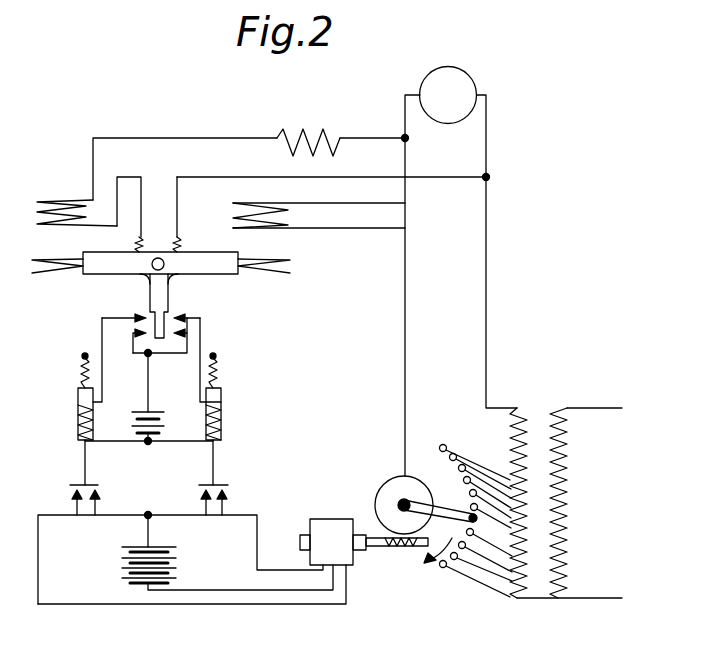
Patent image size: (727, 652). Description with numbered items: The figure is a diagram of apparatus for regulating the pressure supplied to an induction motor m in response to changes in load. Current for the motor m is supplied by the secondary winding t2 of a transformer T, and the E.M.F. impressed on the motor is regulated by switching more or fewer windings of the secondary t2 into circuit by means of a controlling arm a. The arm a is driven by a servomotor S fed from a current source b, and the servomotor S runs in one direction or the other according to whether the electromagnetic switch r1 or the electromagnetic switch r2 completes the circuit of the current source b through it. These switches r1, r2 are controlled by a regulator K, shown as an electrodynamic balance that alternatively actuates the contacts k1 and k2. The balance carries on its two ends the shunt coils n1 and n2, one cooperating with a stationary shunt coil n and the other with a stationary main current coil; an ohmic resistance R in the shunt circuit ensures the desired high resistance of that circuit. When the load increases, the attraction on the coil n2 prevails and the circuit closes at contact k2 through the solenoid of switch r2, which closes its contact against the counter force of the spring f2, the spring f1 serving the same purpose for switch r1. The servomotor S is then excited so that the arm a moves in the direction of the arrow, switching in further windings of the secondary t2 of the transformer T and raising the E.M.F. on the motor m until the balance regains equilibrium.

The induction motor m is at (448, 95).
The ohmic resistance R is at (308, 129).
The stationary shunt coil n is at (304, 212).
The regulator K is at (168, 258).
The shunt coil n1 is at (45, 270).
The shunt coil n2 is at (278, 270).
The contact k1 is at (130, 331).
The contact k2 is at (190, 331).
The spring f1 is at (72, 371).
The spring f2 is at (226, 371).
The electromagnetic switch r1 is at (78, 440).
The electromagnetic switch r2 is at (221, 440).
The current source b is at (158, 549).
The servomotor S is at (364, 542).
The controlling arm a is at (441, 512).
The secondary winding t2 is at (537, 600).
The transformer T is at (566, 502).